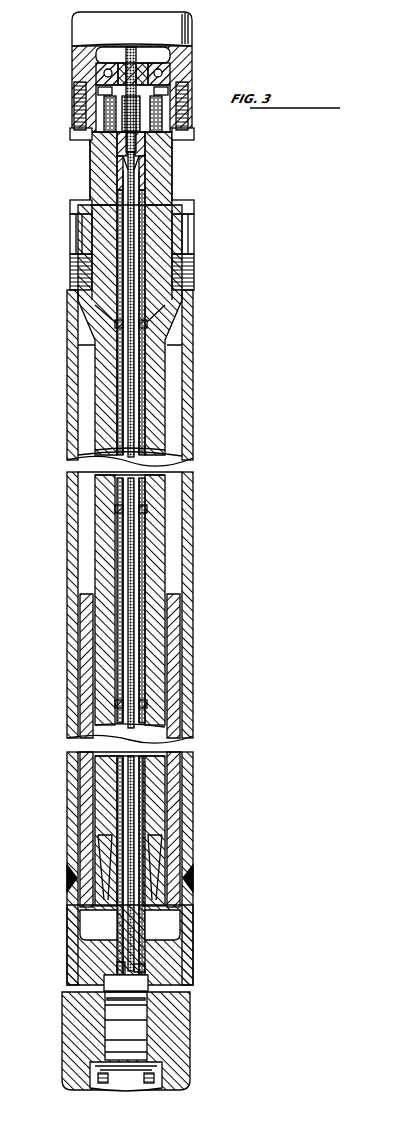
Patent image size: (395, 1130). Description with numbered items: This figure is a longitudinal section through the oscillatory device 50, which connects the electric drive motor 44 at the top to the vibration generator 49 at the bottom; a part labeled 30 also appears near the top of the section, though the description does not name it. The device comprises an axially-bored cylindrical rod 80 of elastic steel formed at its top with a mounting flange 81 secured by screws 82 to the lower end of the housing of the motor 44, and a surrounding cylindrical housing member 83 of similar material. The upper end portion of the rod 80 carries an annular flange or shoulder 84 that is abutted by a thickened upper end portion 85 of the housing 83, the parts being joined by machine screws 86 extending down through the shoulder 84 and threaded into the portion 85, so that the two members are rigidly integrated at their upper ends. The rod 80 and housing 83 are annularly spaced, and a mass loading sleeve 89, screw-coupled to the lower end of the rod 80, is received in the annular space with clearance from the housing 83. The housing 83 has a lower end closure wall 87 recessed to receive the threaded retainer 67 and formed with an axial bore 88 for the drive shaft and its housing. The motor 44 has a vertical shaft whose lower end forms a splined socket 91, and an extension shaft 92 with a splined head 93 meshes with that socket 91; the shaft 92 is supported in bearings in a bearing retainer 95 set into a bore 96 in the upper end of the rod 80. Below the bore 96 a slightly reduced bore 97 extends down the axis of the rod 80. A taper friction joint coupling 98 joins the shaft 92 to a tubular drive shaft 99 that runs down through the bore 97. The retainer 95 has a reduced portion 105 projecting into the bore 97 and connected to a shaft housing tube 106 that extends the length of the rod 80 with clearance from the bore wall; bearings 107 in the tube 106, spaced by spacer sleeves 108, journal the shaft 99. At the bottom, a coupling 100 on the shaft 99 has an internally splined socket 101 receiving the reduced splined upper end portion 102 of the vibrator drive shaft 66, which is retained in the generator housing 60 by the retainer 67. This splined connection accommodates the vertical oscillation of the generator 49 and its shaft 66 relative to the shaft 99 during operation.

The electric drive motor 44 is at (186, 30).
The actuating rod 30 is at (137, 57).
The splined socket 91 is at (124, 60).
The splined head 93 is at (165, 75).
The mounting flange 81 is at (190, 125).
The extension shaft 92 is at (140, 130).
The screws 82 is at (188, 140).
The bore 96 is at (117, 142).
The reduced portion 105 is at (118, 162).
The reduced bore 97 is at (123, 180).
The tubular drive shaft 99 is at (117, 196).
The bearing retainer 95 is at (137, 165).
The taper friction joint coupling 98 is at (140, 180).
The machine screws 86 is at (194, 207).
The annular flange or shoulder 84 is at (194, 236).
The thickened upper end portion 85 is at (194, 269).
The shaft housing tube 106 is at (117, 241).
The oscillatory device 50 is at (204, 327).
The bearings 107 is at (121, 325).
The spacer sleeves 108 is at (119, 345).
The cylindrical housing member 83 is at (186, 370).
The axially-bored cylindrical rod 80 is at (157, 432).
The mass loading sleeve 89 is at (175, 628).
The axial bore 88 is at (180, 930).
The lower end closure wall 87 is at (186, 952).
The coupling 100 is at (120, 967).
The internally splined socket 101 is at (140, 970).
The reduced splined upper end portion 102 is at (148, 978).
The threaded retainer 67 is at (126, 983).
The vibration generator 49 is at (60, 1027).
The generator housing 60 is at (180, 1032).
The vibrator drive shaft 66 is at (126, 1022).